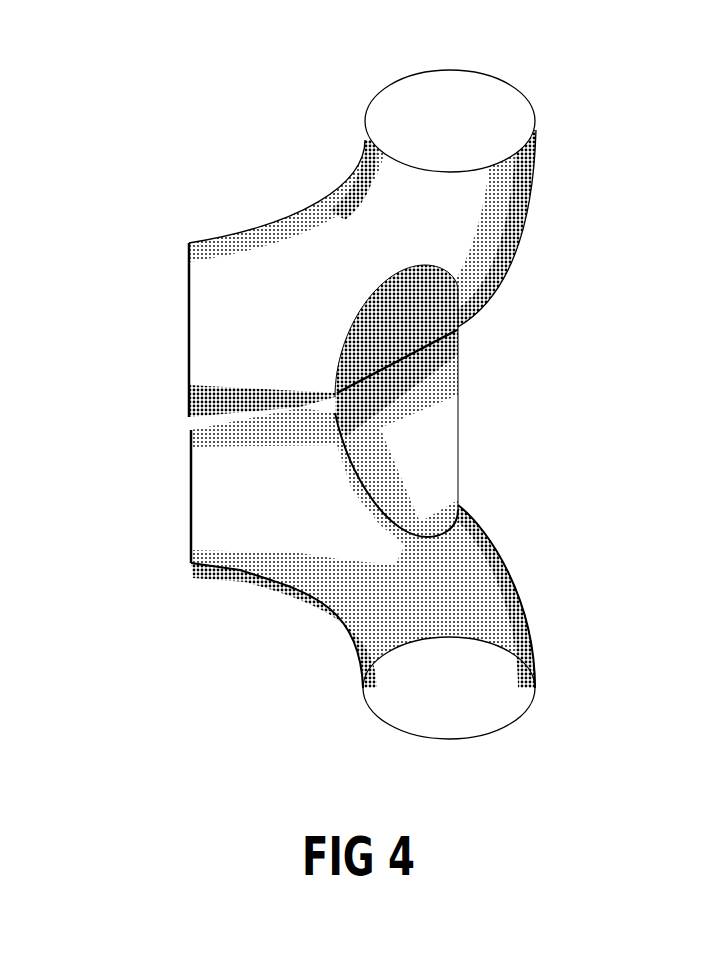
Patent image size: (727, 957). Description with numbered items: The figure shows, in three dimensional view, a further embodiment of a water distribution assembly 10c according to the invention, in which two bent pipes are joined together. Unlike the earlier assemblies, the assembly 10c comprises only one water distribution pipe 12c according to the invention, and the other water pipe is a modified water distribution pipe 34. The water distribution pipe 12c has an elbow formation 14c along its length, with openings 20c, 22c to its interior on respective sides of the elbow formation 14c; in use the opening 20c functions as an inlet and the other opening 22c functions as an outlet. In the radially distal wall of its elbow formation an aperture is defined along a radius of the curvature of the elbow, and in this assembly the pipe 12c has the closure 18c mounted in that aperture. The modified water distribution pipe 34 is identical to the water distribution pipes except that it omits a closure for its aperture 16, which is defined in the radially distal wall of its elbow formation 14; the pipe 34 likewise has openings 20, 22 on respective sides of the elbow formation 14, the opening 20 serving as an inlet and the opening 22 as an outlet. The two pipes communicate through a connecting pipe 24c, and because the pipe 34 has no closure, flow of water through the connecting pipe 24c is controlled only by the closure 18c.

The water distribution assembly 10c is at (140, 87).
The water distribution pipe 12c is at (528, 195).
The elbow formation 14c is at (480, 303).
The aperture 16 is at (375, 528).
The closure 18c is at (452, 342).
The opening 20c is at (453, 95).
The opening 22c is at (180, 327).
The connecting pipe 24c is at (462, 383).
The elbow formation 14 is at (495, 512).
The opening 20 is at (188, 493).
The opening 22 is at (435, 715).
The modified water distribution pipe 34 is at (520, 595).